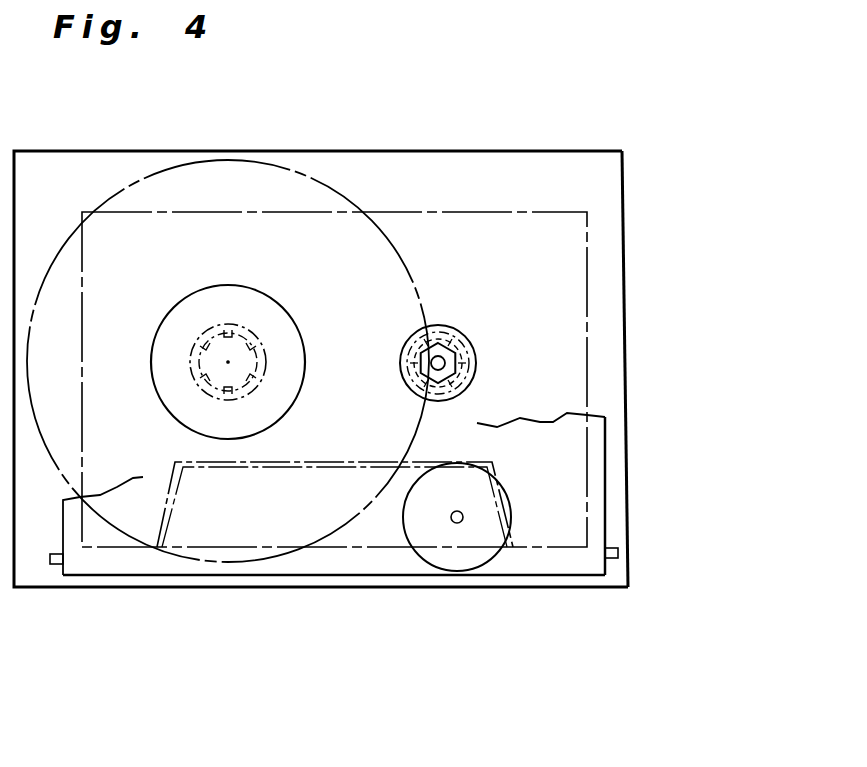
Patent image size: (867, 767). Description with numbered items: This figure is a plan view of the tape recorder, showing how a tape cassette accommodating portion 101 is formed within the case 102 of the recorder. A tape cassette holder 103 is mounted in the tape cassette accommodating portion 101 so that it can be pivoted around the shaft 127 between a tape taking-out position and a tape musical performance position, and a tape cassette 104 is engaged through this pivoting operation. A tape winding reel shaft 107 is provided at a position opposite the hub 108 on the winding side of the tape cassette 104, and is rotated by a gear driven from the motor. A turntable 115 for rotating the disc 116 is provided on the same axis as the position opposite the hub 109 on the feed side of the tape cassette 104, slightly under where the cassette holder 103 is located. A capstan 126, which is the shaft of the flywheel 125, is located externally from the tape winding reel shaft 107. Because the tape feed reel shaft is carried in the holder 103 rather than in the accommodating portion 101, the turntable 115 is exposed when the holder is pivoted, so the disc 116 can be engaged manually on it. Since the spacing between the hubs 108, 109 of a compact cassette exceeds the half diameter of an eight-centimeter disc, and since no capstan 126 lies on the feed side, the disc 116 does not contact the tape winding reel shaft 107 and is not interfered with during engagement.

The tape cassette accommodating portion 101 is at (615, 388).
The case 102 is at (630, 282).
The tape cassette holder 103 is at (598, 513).
The tape cassette 104 is at (570, 240).
The tape winding reel shaft 107 is at (447, 359).
The hub on the winding side 108 is at (445, 327).
The hub on the feed side 109 is at (250, 332).
The turntable 115 is at (287, 362).
The disc 116 is at (208, 553).
The flywheel 125 is at (442, 557).
The capstan 126 is at (461, 520).
The shaft 127 is at (54, 565).